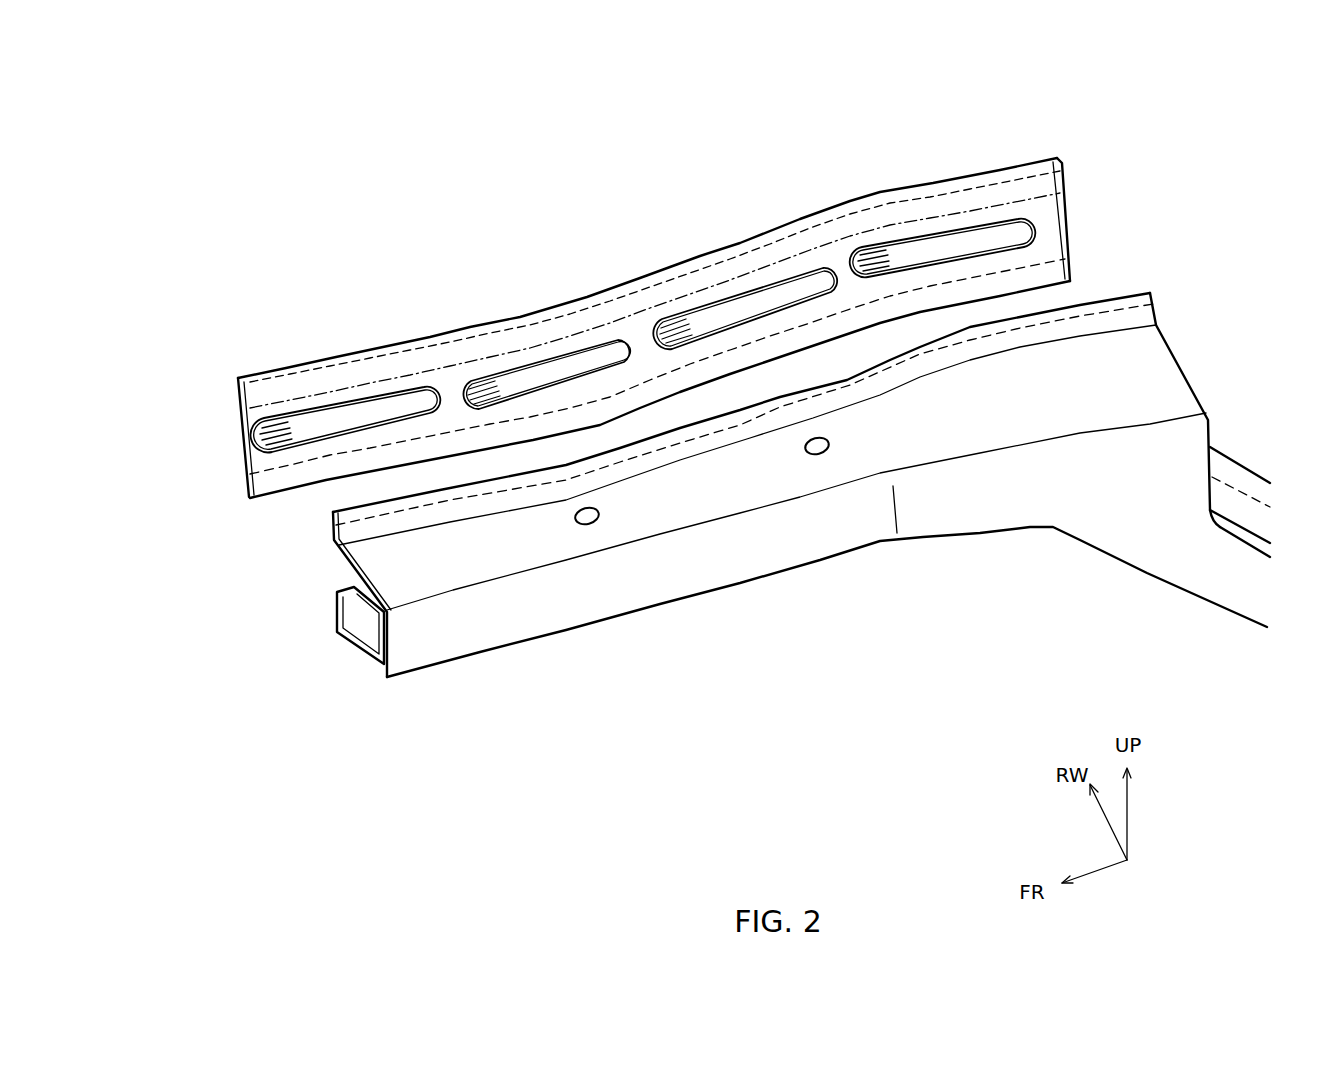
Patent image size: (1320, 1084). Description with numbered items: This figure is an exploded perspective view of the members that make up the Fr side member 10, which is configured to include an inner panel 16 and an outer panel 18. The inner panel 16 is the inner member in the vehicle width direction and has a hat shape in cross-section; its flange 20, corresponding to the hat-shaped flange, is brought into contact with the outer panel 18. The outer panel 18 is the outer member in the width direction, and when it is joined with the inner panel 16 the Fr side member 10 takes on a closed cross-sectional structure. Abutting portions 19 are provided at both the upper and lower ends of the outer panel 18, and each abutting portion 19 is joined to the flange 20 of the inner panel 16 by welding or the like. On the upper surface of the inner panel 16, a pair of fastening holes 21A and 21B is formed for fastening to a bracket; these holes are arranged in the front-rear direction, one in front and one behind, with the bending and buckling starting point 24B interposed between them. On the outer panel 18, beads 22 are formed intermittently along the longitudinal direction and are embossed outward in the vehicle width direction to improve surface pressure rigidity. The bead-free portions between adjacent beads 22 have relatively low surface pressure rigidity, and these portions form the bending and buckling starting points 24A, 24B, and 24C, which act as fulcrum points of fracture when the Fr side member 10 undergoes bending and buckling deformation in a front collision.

The Fr side member 10 is at (308, 192).
The inner panel 16 is at (477, 662).
The outer panel 18 is at (234, 433).
The abutting portion 19 is at (282, 388).
The flange 20 is at (335, 536).
The fastening hole 21A is at (590, 512).
The fastening hole 21B is at (814, 443).
The bead 22 is at (385, 412).
The bending and buckling starting point 24A is at (448, 380).
The bending and buckling starting point 24B is at (637, 338).
The bending and buckling starting point 24C is at (837, 259).